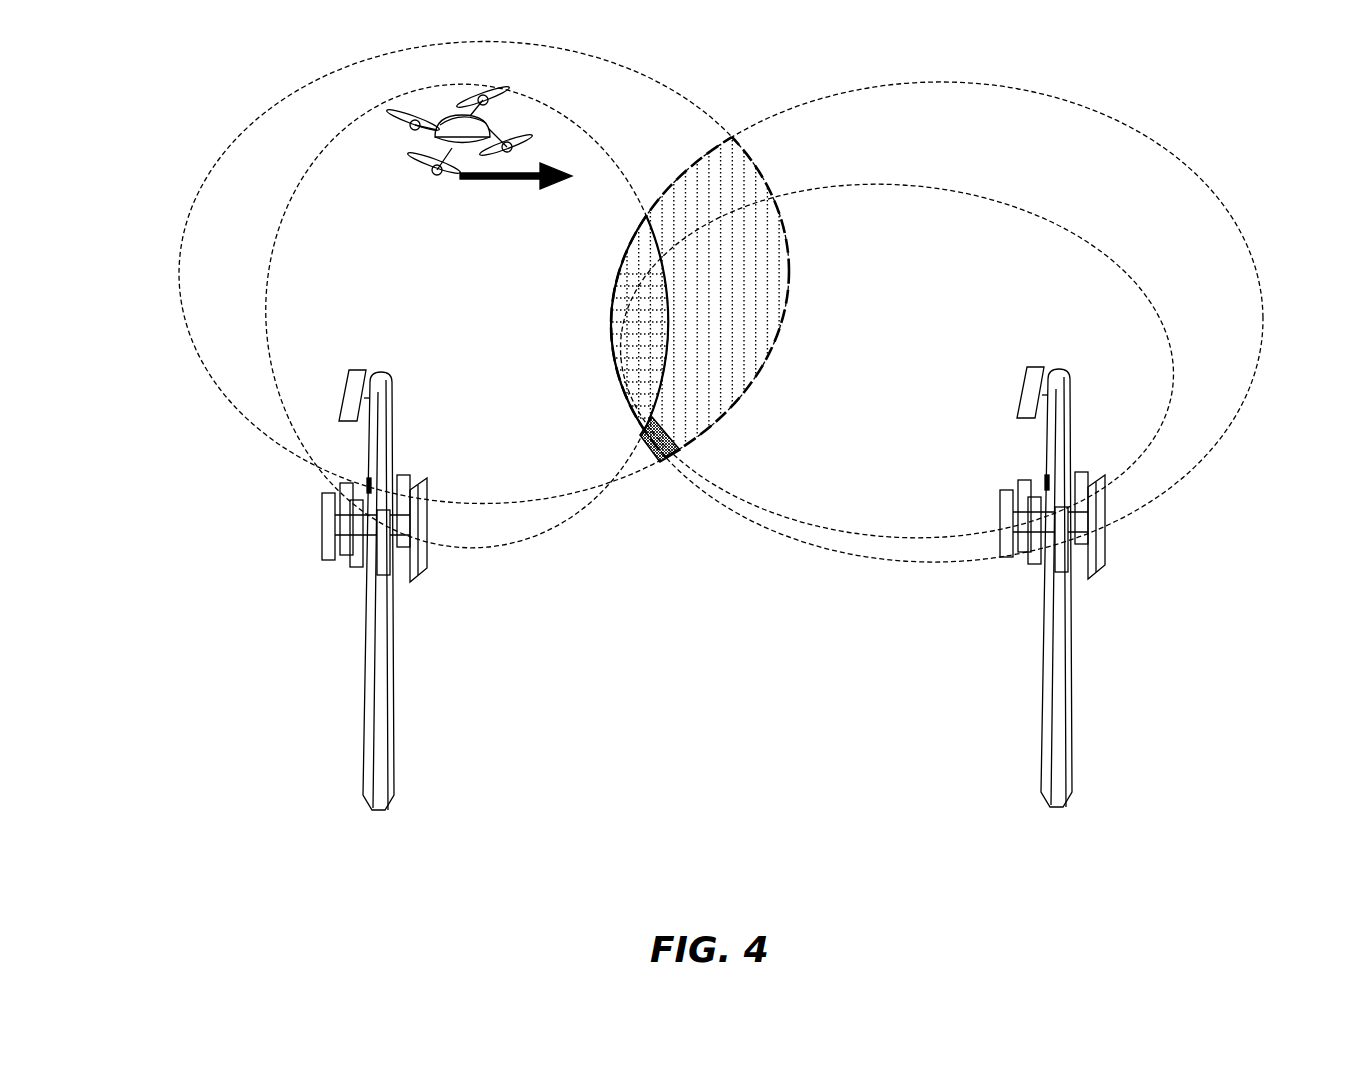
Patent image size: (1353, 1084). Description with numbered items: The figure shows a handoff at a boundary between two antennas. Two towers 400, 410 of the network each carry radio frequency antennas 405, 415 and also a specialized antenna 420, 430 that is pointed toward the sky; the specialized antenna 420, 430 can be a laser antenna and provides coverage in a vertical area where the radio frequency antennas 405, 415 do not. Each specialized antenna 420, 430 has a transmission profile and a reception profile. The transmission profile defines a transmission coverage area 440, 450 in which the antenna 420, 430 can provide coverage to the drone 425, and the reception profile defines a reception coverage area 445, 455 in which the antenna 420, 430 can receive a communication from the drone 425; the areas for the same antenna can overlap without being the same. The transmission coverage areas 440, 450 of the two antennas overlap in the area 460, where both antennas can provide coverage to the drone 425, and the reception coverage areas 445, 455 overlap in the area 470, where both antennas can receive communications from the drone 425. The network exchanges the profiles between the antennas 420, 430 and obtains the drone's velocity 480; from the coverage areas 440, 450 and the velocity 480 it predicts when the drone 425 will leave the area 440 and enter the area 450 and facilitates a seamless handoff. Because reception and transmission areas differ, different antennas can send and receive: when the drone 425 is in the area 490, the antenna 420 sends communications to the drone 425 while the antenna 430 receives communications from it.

The tower 400 is at (393, 393).
The radio frequency antenna 405 is at (322, 525).
The tower 410 is at (1071, 391).
The radio frequency antenna 415 is at (1000, 523).
The specialized antenna 420 is at (345, 408).
The drone 425 is at (433, 170).
The specialized antenna 430 is at (1022, 407).
The transmission coverage area 440 is at (180, 262).
The reception coverage area 445 is at (285, 219).
The transmission coverage area 450 is at (803, 107).
The reception coverage area 455 is at (900, 186).
The transmission overlap area 460 is at (718, 304).
The reception overlap area 470 is at (663, 366).
The drone's velocity 480 is at (553, 184).
The area 490 is at (661, 465).